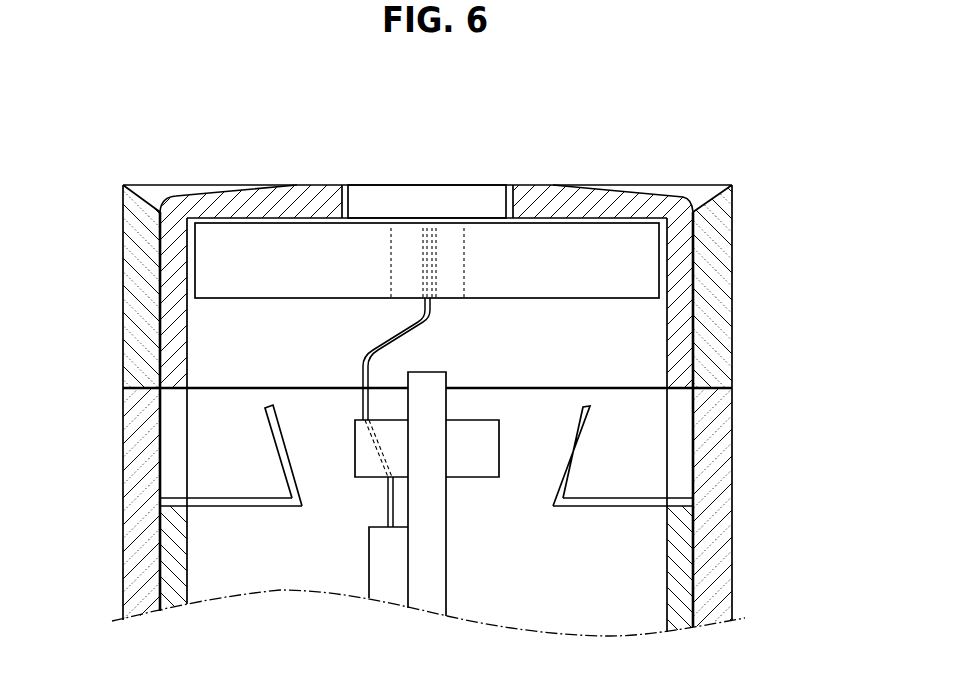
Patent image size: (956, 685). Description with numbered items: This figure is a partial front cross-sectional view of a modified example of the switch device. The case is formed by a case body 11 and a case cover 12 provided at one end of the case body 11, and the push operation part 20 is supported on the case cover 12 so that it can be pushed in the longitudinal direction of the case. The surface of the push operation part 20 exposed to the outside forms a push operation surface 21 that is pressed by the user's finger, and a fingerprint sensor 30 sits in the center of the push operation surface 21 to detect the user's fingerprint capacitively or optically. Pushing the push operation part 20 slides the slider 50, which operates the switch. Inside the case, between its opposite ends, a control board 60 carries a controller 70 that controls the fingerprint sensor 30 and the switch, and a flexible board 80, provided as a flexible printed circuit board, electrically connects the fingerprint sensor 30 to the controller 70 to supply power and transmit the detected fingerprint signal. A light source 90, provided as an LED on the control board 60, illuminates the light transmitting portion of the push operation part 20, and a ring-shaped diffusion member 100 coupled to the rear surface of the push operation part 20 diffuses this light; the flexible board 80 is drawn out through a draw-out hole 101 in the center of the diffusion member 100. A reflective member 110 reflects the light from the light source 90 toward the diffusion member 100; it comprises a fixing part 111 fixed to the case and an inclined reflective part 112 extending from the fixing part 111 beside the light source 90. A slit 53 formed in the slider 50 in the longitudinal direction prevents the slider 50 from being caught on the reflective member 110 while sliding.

The case body 11 is at (732, 480).
The case cover 12 is at (733, 317).
The push operation part 20 is at (426, 247).
The push operation surface 21 is at (607, 190).
The fingerprint sensor 30 is at (398, 182).
The slider 50 is at (463, 410).
The slit 53 is at (434, 369).
The control board 60 is at (447, 582).
The controller 70 is at (378, 562).
The flexible board 80 is at (383, 342).
The light source 90 is at (363, 458).
The diffusion member 100 is at (427, 236).
The draw-out hole 101 is at (465, 265).
The reflective member 110 is at (426, 492).
The fixing part 111 is at (426, 502).
The reflective part 112 is at (570, 443).